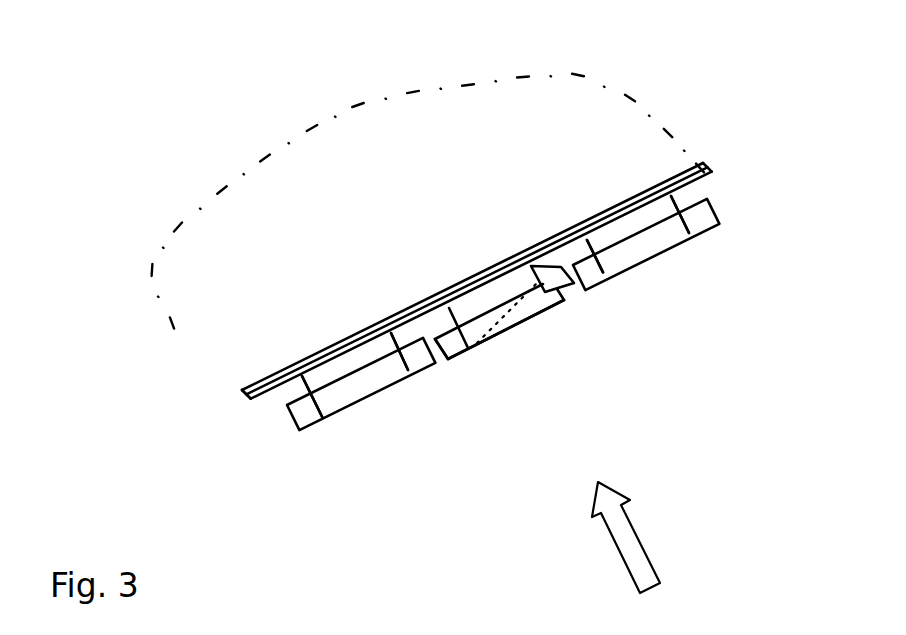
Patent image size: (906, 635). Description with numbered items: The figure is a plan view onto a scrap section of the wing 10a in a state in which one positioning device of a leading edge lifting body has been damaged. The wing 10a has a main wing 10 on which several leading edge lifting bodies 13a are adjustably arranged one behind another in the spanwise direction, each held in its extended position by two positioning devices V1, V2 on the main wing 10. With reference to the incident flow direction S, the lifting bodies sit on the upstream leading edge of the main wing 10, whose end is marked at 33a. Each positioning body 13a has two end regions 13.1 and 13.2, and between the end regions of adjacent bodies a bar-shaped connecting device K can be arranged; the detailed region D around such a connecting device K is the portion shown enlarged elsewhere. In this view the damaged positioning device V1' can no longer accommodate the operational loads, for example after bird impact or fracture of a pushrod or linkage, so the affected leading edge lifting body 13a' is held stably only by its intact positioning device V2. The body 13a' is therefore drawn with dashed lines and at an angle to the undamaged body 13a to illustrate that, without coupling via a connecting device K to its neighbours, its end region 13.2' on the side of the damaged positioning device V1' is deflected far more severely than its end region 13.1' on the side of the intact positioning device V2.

The main wing 10 is at (328, 138).
The wing 10a is at (158, 181).
The detailed region D is at (418, 92).
The leading edge lifting body 13a is at (528, 344).
The end region 13.1 is at (391, 325).
The end region 13.2 is at (483, 307).
The positioning device V1 is at (472, 352).
The positioning device V2 is at (683, 238).
The rail end 33a is at (258, 377).
The leading edge lifting body with damaged positioning device 13a' is at (526, 354).
The end region 13.1' is at (492, 403).
The end region 13.2' is at (533, 234).
The damaged positioning device V1' is at (550, 387).
The connecting device K is at (577, 280).
The incident flow direction S is at (636, 537).